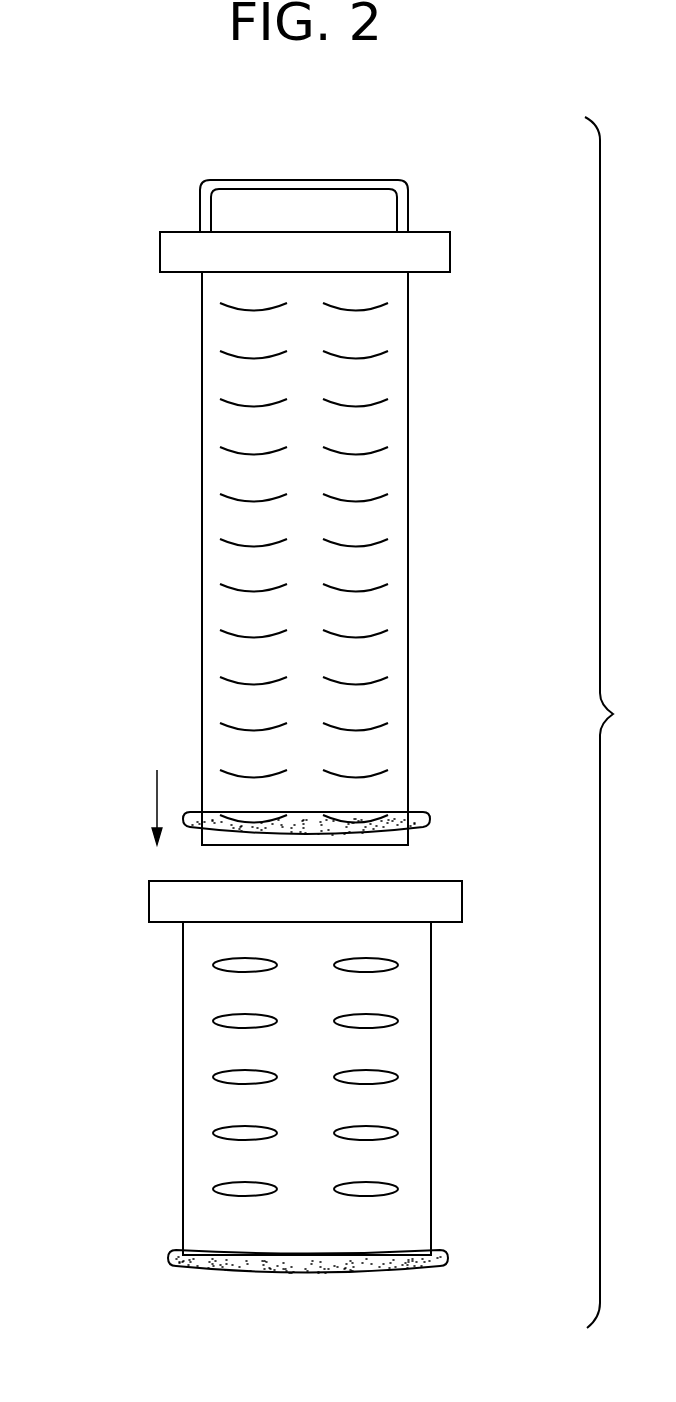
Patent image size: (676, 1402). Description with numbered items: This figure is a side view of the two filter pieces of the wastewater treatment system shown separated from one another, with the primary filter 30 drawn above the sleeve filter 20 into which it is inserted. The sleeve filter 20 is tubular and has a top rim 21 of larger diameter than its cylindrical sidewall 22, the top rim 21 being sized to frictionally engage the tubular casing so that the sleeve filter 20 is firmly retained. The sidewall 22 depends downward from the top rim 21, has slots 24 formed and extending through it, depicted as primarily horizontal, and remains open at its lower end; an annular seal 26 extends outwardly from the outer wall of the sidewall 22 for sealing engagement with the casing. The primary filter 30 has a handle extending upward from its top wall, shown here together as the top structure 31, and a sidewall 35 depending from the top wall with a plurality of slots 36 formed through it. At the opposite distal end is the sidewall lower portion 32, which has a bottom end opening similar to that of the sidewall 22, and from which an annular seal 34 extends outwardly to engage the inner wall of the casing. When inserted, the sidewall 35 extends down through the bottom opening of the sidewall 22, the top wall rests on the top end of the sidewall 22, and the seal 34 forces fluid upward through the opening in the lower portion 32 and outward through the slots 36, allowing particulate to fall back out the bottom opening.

The sleeve filter 20 is at (138, 901).
The top rim 21 is at (452, 905).
The sidewall 22 is at (213, 994).
The slots 24 is at (215, 1077).
The annular seal 26 is at (447, 1256).
The primary filter 30 is at (178, 463).
The handle and top wall 31 is at (176, 250).
The sidewall lower portion 32 is at (289, 178).
The annular seal 34 is at (430, 819).
The sidewall 35 is at (230, 525).
The slots 36 is at (252, 727).